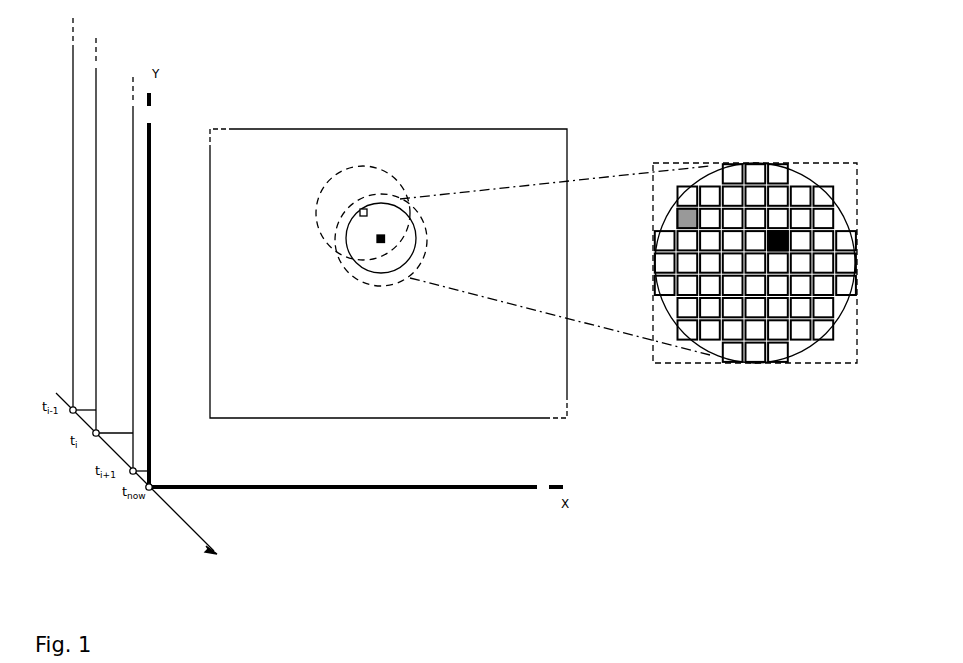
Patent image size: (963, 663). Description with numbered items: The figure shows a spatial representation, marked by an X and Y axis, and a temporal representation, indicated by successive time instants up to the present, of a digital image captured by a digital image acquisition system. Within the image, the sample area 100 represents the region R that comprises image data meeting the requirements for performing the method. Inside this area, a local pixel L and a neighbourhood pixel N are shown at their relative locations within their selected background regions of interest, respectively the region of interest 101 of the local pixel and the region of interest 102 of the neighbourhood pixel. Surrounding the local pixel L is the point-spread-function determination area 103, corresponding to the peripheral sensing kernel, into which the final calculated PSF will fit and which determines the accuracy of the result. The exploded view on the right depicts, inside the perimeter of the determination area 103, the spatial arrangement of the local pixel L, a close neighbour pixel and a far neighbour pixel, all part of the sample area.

The sample area 100 is at (563, 122).
The background region of interest of the local pixel 101 is at (418, 264).
The background region of interest of the neighbourhood pixel 102 is at (366, 167).
The point-spread-function determination area 103 is at (407, 280).